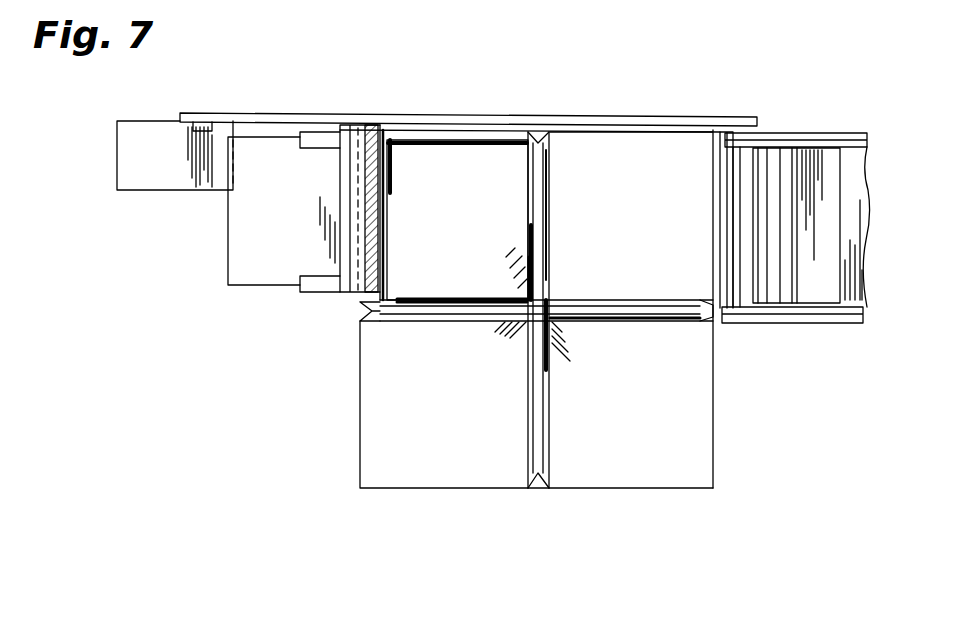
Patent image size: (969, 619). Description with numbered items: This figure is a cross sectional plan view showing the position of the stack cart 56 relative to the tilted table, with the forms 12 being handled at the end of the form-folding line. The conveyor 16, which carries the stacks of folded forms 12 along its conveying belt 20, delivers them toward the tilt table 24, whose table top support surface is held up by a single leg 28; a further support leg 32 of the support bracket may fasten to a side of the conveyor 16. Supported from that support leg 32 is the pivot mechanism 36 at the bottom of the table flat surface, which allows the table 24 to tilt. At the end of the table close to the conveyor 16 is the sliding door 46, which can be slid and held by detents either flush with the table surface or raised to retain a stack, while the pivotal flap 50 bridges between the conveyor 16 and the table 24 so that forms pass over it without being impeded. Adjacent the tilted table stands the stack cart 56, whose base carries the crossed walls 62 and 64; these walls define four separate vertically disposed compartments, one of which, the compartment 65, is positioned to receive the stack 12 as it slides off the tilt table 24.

The folded forms 12 is at (502, 140).
The conveyor 16 is at (803, 325).
The conveying belt 20 is at (745, 157).
The tilt table 24 is at (362, 255).
The leg 28 is at (177, 113).
The support leg 32 is at (593, 118).
The pivot mechanism 36 is at (338, 226).
The sliding door 46 is at (228, 250).
The flap 50 is at (727, 157).
The stack cart 56 is at (355, 478).
The crossed wall 62 is at (400, 313).
The crossed wall 64 is at (545, 447).
The compartment 65 is at (473, 133).